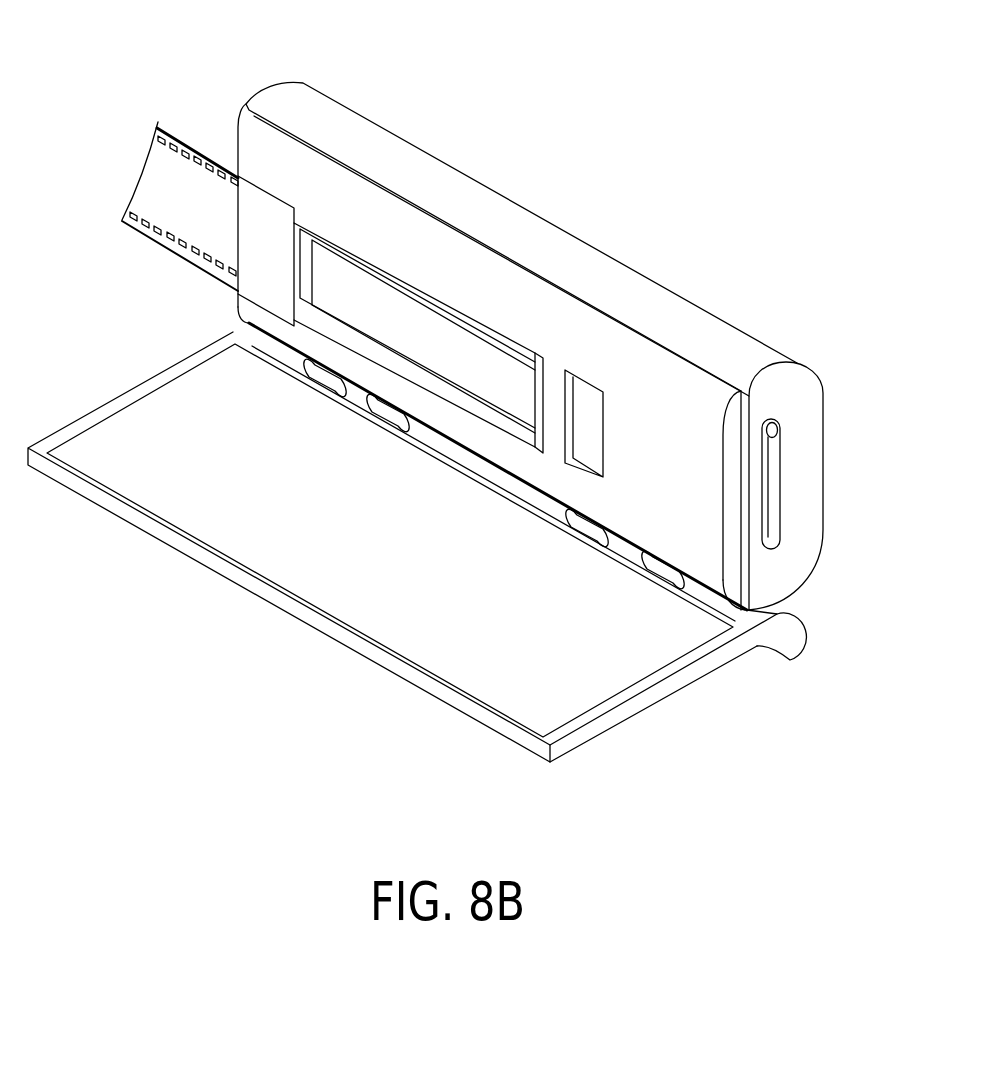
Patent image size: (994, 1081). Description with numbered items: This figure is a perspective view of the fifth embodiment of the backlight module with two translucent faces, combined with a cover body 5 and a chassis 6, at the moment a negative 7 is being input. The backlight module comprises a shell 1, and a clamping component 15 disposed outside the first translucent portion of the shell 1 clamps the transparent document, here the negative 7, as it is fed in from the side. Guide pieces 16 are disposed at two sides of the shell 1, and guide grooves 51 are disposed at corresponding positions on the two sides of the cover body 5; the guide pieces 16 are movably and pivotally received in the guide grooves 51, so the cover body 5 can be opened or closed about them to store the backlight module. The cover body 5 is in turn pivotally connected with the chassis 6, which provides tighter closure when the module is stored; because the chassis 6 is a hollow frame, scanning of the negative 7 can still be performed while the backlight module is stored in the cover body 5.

The shell 1 is at (647, 390).
The cover body 5 is at (777, 382).
The chassis 6 is at (696, 671).
The negative 7 is at (150, 178).
The clamping component 15 is at (285, 237).
The guide pieces 16 is at (771, 425).
The guide grooves 51 is at (772, 525).